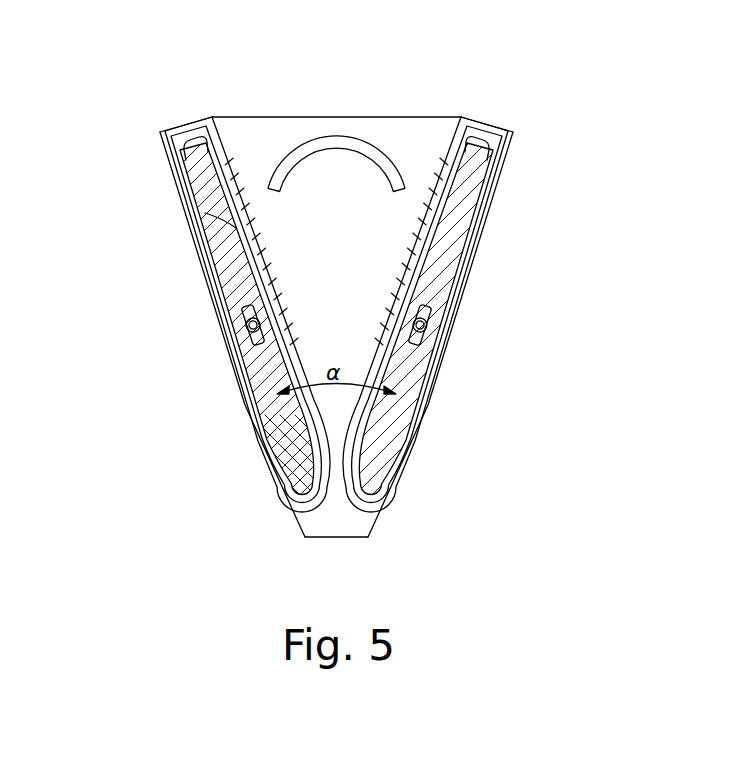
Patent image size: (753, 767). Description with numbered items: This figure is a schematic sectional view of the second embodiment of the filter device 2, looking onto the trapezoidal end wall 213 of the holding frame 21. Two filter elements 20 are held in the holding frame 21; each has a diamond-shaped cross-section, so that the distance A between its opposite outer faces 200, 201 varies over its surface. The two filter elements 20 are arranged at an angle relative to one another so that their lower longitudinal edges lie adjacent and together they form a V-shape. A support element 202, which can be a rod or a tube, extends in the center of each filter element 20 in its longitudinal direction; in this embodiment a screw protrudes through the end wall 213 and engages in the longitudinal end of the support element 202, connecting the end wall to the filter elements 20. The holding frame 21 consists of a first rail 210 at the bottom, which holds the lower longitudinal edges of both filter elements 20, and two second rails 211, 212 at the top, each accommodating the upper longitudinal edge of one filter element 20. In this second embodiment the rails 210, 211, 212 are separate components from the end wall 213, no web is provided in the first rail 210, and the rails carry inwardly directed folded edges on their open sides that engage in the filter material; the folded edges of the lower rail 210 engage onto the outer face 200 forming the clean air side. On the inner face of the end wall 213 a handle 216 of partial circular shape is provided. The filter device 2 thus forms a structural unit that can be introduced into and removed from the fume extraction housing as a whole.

The filter device 2 is at (425, 97).
The filter element 20 is at (197, 287).
The holding frame 21 is at (371, 104).
The outer face 200 is at (250, 415).
The outer face 201 is at (212, 292).
The support element 202 is at (420, 331).
The first rail 210 is at (337, 540).
The second rail 211 is at (180, 119).
The second rail 212 is at (492, 118).
The end wall 213 is at (242, 135).
The handle 216 is at (340, 137).
The distance A is at (205, 213).